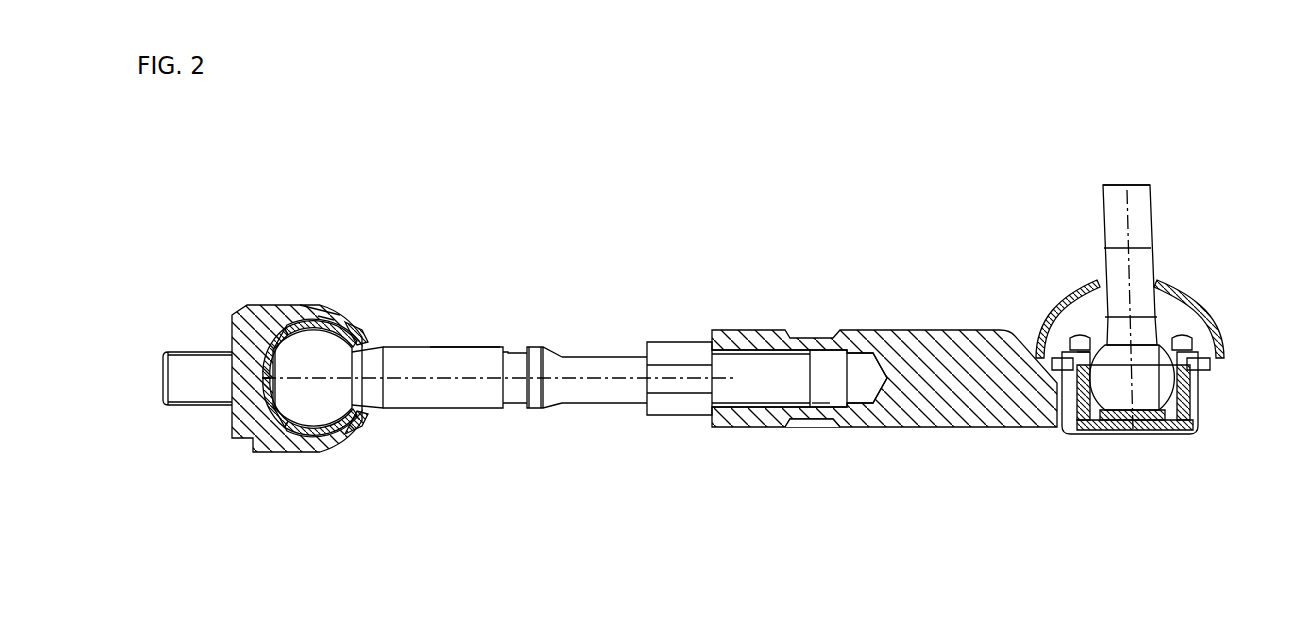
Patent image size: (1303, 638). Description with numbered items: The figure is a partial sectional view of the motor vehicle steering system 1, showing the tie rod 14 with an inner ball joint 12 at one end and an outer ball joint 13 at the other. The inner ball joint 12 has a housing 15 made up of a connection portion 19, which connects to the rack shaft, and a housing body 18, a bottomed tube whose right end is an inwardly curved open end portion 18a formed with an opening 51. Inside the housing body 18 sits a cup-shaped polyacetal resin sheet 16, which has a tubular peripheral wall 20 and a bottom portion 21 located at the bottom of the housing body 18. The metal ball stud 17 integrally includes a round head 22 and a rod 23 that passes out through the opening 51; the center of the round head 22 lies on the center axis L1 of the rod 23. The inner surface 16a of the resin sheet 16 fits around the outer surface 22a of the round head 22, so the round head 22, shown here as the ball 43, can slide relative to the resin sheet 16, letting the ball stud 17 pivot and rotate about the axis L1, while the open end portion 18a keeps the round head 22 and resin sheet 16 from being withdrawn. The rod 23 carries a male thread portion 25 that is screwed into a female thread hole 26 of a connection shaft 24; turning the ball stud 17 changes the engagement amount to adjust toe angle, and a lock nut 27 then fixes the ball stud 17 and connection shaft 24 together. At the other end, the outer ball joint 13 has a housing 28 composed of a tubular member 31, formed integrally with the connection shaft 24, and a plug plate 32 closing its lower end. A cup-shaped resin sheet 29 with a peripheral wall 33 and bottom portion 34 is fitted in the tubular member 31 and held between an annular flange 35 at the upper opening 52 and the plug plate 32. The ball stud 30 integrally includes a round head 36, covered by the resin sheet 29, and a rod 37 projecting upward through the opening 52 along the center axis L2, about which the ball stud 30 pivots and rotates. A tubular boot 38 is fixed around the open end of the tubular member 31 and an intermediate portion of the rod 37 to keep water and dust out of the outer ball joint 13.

The motor vehicle steering system 1 is at (273, 160).
The inner ball joint 12 is at (250, 305).
The outer ball joint 13 is at (1080, 336).
The tie rod 14 is at (593, 356).
The housing 15 is at (286, 305).
The resin sheet 16 is at (340, 320).
The inner surface 16a is at (330, 318).
The ball stud 17 is at (463, 345).
The housing body 18 is at (343, 437).
The open end portion 18a is at (360, 322).
The connection portion 19 is at (205, 390).
The peripheral wall 20 is at (305, 436).
The bottom portion 21 is at (277, 430).
The round head 22 is at (360, 406).
The outer surface 22a is at (360, 428).
The rod 23 is at (457, 410).
The connection shaft 24 is at (870, 332).
The male thread portion 25 is at (752, 395).
The female thread hole 26 is at (820, 410).
The lock nut 27 is at (680, 416).
The housing 28 is at (1203, 392).
The resin sheet 29 is at (1176, 434).
The ball stud 30 is at (1152, 200).
The tubular member 31 is at (1192, 408).
The plug plate 32 is at (1130, 431).
The peripheral wall 33 is at (1066, 404).
The bottom portion 34 is at (1105, 422).
The annular flange 35 is at (1183, 338).
The round head 36 is at (1157, 390).
The rod 37 is at (1140, 222).
The tubular boot 38 is at (1216, 315).
The ball 43 is at (340, 400).
The opening 51 is at (364, 352).
The opening 52 is at (1083, 345).
The center axis L1 is at (478, 390).
The center axis L2 is at (1100, 212).